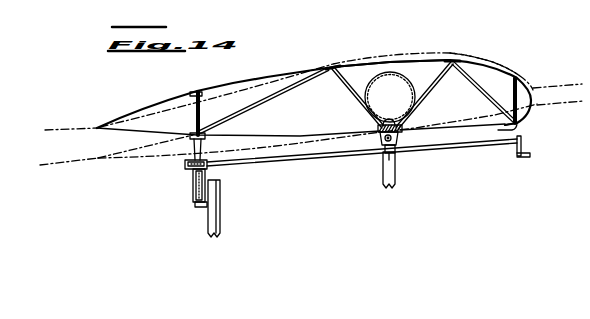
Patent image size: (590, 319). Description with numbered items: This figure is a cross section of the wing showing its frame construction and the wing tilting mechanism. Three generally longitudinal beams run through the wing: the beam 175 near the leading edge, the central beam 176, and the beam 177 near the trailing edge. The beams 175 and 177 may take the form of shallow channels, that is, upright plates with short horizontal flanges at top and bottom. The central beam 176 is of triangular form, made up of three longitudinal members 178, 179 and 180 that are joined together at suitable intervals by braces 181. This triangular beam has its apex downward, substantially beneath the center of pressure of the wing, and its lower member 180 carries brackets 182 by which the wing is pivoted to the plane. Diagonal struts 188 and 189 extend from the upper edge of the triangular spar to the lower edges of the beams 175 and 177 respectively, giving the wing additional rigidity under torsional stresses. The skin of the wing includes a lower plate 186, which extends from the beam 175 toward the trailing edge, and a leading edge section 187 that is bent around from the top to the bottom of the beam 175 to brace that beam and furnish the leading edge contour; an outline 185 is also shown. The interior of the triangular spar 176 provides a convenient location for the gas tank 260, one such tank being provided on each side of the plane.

The beam 175 is at (513, 83).
The central beam 176 is at (428, 92).
The beam 177 is at (203, 96).
The longitudinal member 178 is at (452, 58).
The longitudinal member 179 is at (333, 64).
The lower member 180 is at (376, 133).
The braces 181 is at (391, 61).
The brackets 182 is at (399, 139).
The phantom wing outline 185 is at (482, 60).
The lower plate 186 is at (512, 131).
The leading edge section 187 is at (536, 104).
The diagonal strut 188 is at (494, 105).
The diagonal strut 189 is at (242, 113).
The gas tank 260 is at (400, 103).